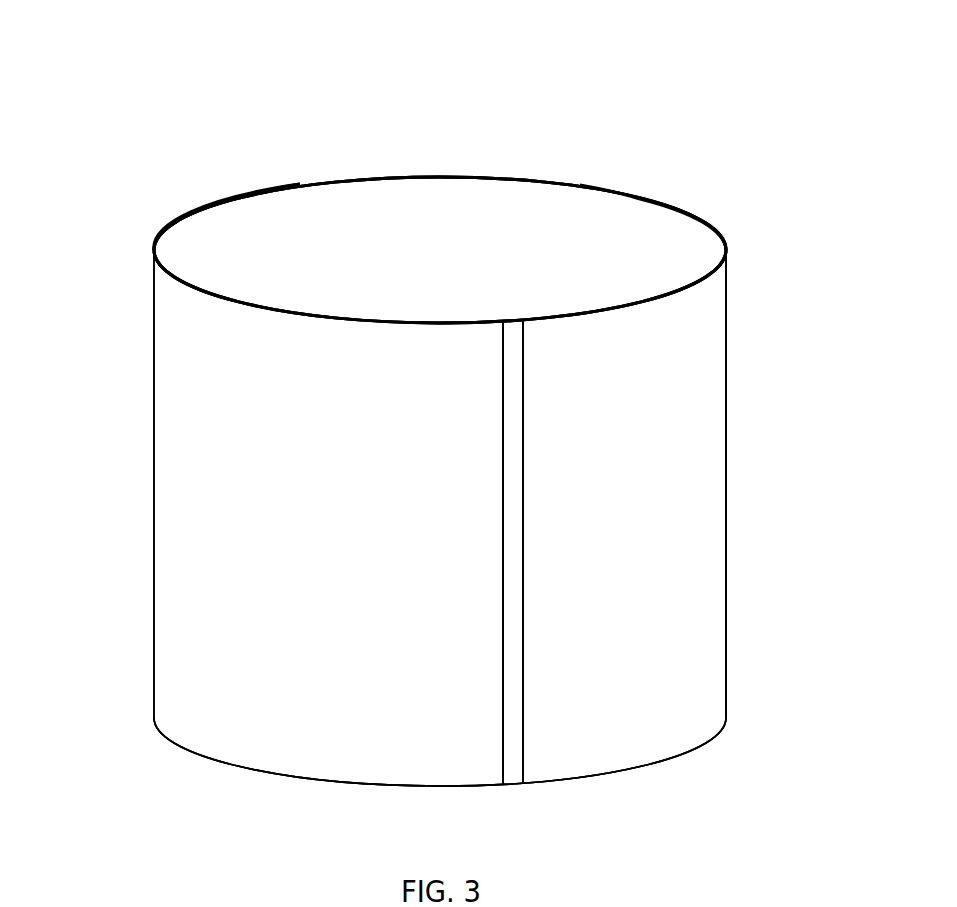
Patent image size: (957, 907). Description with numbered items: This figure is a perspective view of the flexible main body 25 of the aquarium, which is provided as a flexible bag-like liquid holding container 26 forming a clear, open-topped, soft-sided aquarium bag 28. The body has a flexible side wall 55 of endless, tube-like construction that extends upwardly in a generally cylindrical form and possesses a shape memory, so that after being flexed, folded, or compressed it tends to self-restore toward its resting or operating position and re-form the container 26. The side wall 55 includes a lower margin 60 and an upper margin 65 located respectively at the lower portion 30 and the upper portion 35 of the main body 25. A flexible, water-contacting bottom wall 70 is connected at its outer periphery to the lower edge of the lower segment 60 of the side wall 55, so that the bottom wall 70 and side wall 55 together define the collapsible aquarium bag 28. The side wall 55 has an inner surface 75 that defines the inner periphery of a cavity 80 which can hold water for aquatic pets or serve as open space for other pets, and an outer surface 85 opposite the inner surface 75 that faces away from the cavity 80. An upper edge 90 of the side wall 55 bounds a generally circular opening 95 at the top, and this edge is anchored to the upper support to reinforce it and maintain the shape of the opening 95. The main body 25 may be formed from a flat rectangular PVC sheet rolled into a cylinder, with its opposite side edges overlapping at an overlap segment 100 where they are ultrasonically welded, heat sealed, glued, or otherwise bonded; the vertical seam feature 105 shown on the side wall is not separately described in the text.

The flexible main body 25 is at (840, 402).
The flexible bag-like liquid holding container 26 is at (350, 124).
The aquarium bag 28 is at (482, 133).
The lower portion 30 is at (135, 700).
The upper portion 35 is at (128, 281).
The flexible side wall 55 is at (210, 500).
The lower margin 60 is at (730, 656).
The upper margin 65 is at (732, 262).
The bottom wall 70 is at (272, 770).
The inner surface 75 is at (667, 243).
The cavity 80 is at (600, 243).
The outer surface 85 is at (724, 544).
The upper edge 90 is at (173, 223).
The opening 95 is at (257, 213).
The overlap segment 100 is at (529, 501).
The seam line 105 is at (513, 523).